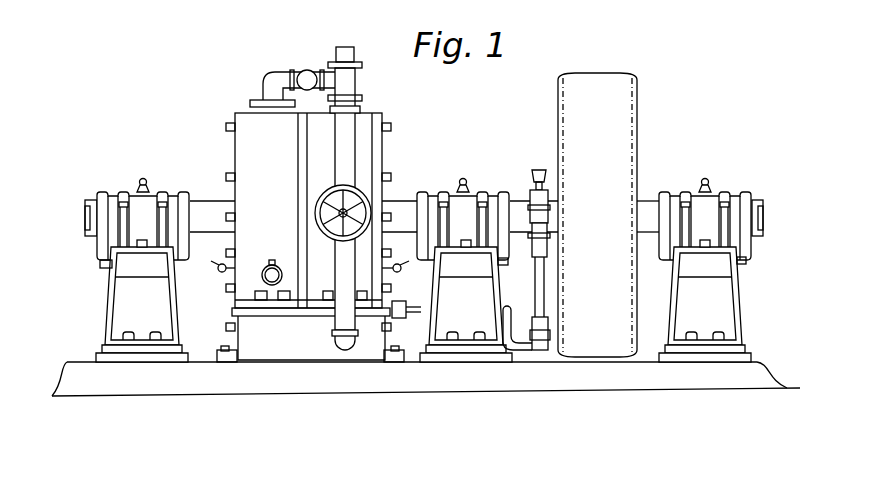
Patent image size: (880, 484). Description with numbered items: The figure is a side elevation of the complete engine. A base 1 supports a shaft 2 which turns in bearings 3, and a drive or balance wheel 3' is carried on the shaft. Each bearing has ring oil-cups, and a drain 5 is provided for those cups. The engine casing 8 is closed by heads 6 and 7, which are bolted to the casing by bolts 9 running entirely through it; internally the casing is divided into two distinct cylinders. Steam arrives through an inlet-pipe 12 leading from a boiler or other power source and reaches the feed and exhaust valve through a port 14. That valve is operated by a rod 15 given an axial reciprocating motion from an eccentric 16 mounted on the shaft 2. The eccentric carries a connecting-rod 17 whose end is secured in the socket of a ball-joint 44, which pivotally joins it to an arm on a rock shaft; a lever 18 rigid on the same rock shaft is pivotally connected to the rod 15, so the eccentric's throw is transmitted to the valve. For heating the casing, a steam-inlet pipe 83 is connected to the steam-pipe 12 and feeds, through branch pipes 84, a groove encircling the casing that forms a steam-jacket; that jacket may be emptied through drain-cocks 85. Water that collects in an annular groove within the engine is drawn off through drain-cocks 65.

The base 1 is at (475, 388).
The shaft 2 is at (85, 224).
The bearings 3 is at (415, 259).
The drive or balance wheel 3' is at (608, 215).
The drain 5 is at (105, 268).
The head 6 is at (240, 140).
The head 7 is at (380, 155).
The casing 8 is at (258, 152).
The bolts 9 is at (230, 127).
The port 14 is at (329, 102).
The inlet-pipe 12 is at (345, 127).
The rod 15 is at (408, 324).
The eccentric 16 is at (549, 186).
The connecting-rod 17 is at (536, 293).
The lever 18 is at (506, 316).
The ball-joint 44 is at (543, 352).
The drain-cocks 65 is at (308, 278).
The steam-inlet pipe 83 is at (308, 71).
The branch pipes 84 is at (265, 101).
The drain-cocks 85 is at (283, 277).